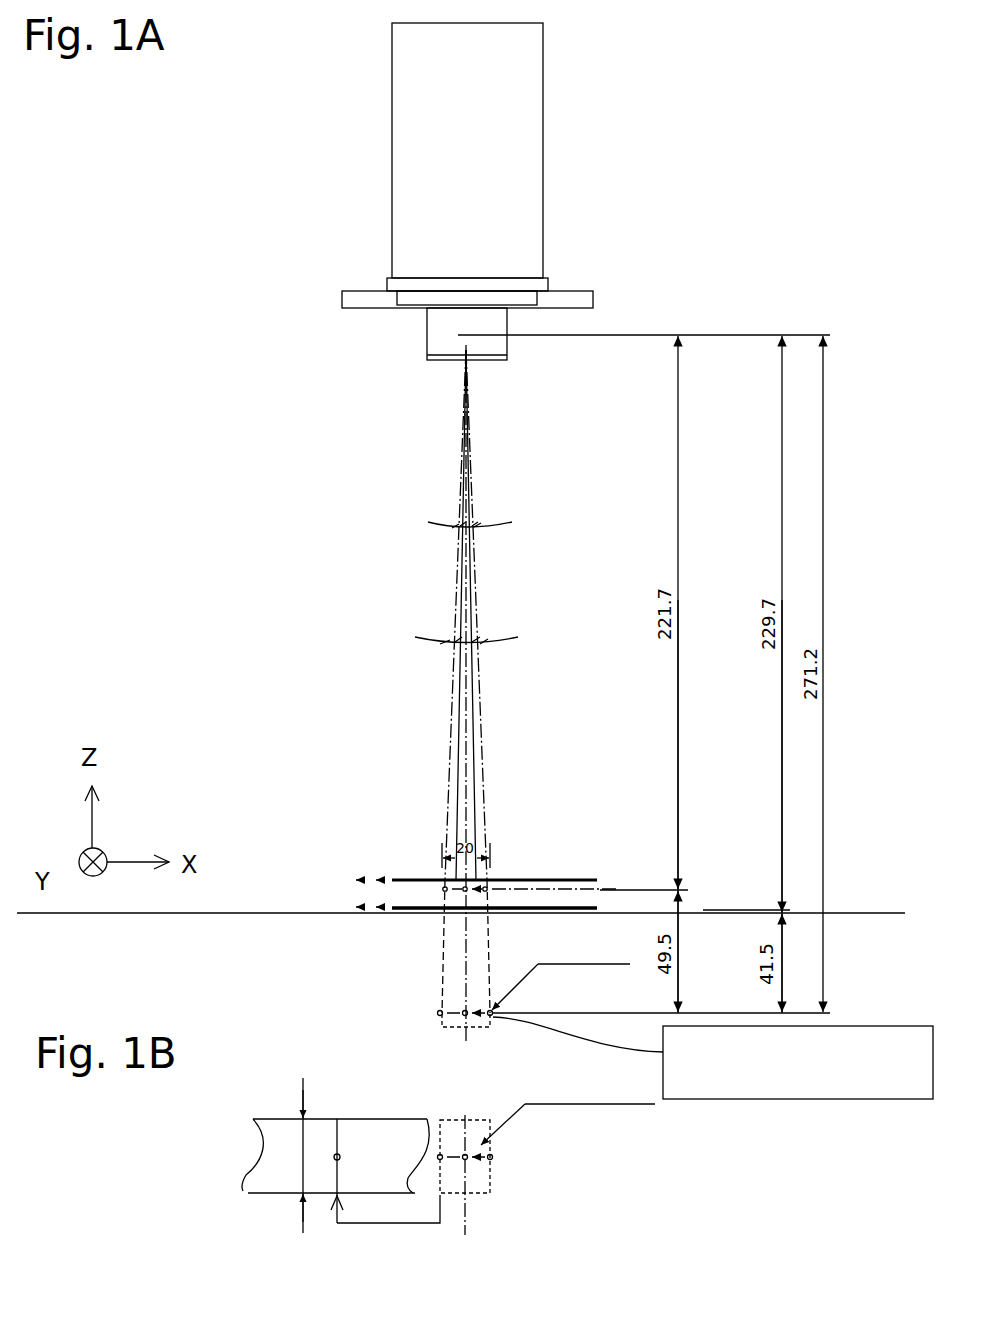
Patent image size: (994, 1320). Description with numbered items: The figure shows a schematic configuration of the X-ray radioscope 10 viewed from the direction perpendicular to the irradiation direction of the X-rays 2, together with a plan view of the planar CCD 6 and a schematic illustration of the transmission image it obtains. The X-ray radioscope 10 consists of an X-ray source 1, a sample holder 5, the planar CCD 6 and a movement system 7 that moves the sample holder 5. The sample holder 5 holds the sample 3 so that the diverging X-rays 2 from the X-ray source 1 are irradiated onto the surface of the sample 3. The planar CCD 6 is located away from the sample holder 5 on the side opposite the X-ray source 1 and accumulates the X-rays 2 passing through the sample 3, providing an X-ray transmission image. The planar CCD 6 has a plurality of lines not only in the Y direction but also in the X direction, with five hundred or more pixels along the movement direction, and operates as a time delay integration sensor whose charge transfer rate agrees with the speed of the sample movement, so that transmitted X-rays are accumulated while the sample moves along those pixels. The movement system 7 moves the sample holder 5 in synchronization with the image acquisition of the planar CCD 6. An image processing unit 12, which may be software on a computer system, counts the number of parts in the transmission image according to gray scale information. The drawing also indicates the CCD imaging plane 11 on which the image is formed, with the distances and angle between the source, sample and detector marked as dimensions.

In FIG. 1A, the X-ray source 1 is at (543, 107).
In FIG. 1A, the X-rays 2 is at (450, 680).
In FIG. 1A, the sample 3 is at (445, 889).
In FIG. 1A, the sample holder 5 is at (405, 908).
In FIG. 1A, the planar CCD 6 is at (448, 1012).
In FIG. 1B, the planar CCD 6 is at (493, 1157).
In FIG. 1A, the movement system 7 is at (433, 956).
In FIG. 1A, the X-ray radioscope 10 is at (822, 134).
In FIG. 1B, the CCD imaging plane 11 is at (270, 1193).
In FIG. 1A, the image processing unit 12 is at (775, 1100).